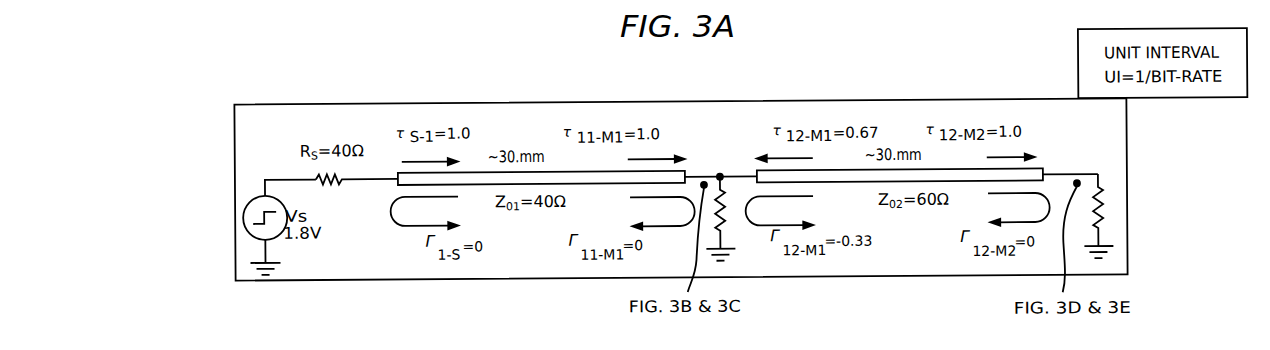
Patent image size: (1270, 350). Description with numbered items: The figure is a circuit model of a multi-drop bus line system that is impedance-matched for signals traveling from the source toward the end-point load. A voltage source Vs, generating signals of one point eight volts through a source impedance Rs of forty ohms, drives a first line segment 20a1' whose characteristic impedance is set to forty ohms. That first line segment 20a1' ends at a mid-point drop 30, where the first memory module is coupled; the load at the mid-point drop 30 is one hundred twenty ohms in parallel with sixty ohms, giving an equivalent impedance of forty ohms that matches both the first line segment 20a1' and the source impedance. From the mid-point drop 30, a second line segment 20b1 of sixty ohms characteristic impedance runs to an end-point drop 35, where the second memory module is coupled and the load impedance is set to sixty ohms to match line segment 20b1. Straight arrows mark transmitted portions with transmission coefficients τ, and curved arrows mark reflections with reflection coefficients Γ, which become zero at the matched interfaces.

The first line segment 20a1' is at (541, 127).
The mid-point drop 30 is at (720, 177).
The line segment 20b1 is at (860, 171).
The end-point drop 35 is at (1098, 177).